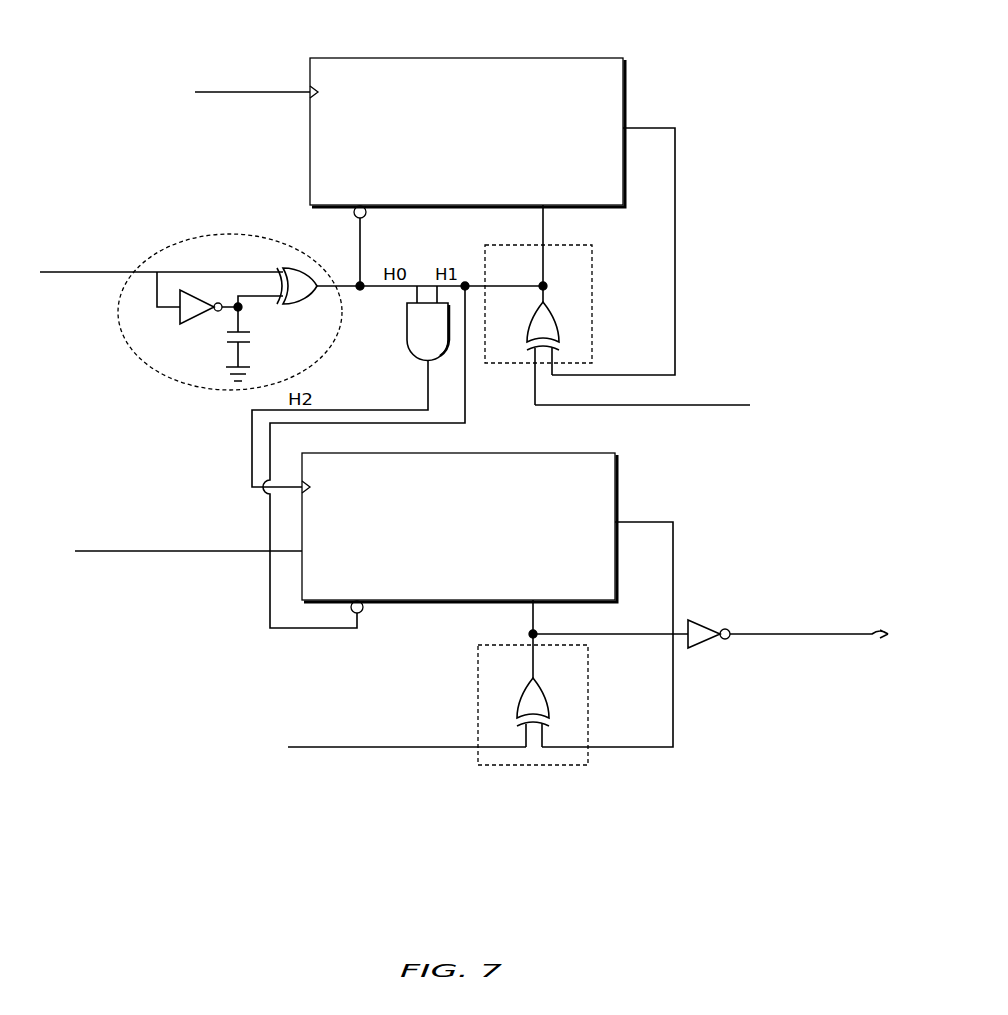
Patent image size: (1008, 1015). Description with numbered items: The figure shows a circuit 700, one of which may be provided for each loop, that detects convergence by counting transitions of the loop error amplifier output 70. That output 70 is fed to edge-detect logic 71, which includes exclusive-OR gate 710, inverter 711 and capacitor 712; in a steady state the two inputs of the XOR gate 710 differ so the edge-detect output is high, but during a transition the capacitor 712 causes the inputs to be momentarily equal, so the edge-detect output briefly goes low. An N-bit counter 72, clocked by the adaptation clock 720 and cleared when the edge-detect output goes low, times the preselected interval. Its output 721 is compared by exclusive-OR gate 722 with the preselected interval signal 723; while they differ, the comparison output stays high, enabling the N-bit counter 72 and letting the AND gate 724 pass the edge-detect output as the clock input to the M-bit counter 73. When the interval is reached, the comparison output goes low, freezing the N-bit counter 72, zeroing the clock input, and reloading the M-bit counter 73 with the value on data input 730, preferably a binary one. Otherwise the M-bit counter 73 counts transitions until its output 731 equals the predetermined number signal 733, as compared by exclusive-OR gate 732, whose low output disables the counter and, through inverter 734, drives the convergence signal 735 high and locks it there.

The circuit 700 is at (783, 90).
The loop error amplifier output 70 is at (75, 271).
The edge-detect logic 71 is at (201, 234).
The exclusive-OR gate 710 is at (319, 302).
The inverter 711 is at (185, 322).
The capacitor 712 is at (224, 352).
The N-bit counter 72 is at (573, 57).
The adaptation clock 720 is at (213, 94).
The N-bit counter output 721 is at (644, 127).
The exclusive-OR gate 722 is at (559, 320).
The preselected interval signal 723 is at (736, 408).
The AND gate 724 is at (407, 342).
The M-bit counter 73 is at (601, 452).
The data input 730 is at (143, 552).
The M-bit counter output 731 is at (649, 521).
The exclusive-OR gate 732 is at (549, 690).
The predetermined number signal 733 is at (338, 749).
The inverter 734 is at (701, 629).
The convergence signal 735 is at (884, 646).